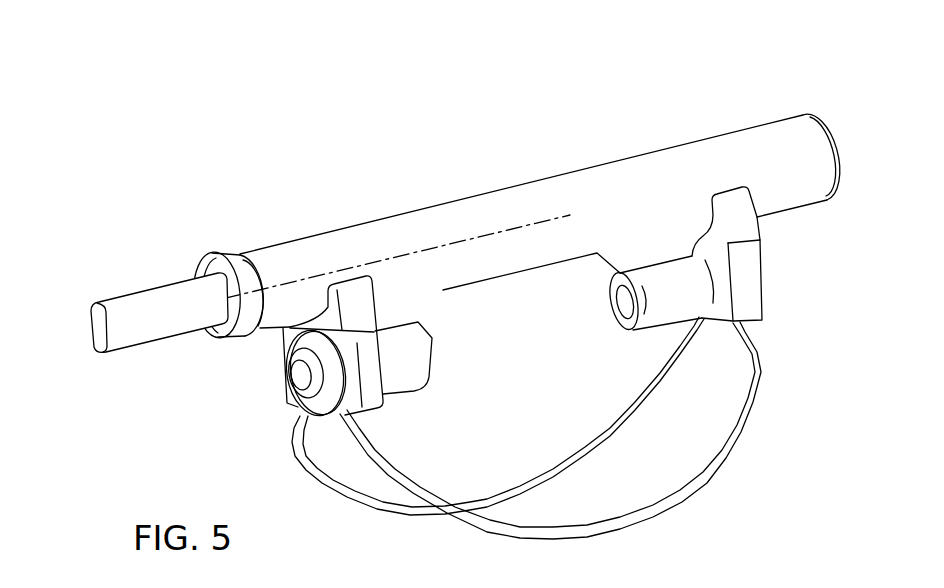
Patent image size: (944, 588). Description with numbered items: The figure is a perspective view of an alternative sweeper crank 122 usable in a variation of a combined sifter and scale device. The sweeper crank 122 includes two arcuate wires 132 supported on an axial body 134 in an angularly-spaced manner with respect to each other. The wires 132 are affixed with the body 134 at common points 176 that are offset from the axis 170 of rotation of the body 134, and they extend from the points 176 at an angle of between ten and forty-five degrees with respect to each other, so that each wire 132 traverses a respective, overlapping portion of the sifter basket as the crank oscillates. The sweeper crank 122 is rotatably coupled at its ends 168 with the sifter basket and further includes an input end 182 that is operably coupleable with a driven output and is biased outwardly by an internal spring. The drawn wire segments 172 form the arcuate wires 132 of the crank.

The sweeper crank 122 is at (605, 112).
The ends 168 is at (97, 310).
The axial body 134 is at (271, 251).
The axis of rotation 170 is at (397, 257).
The common points 176 is at (287, 383).
The input end 182 is at (140, 357).
The arcuate wires 132 is at (552, 443).
The wire 172 is at (577, 457).